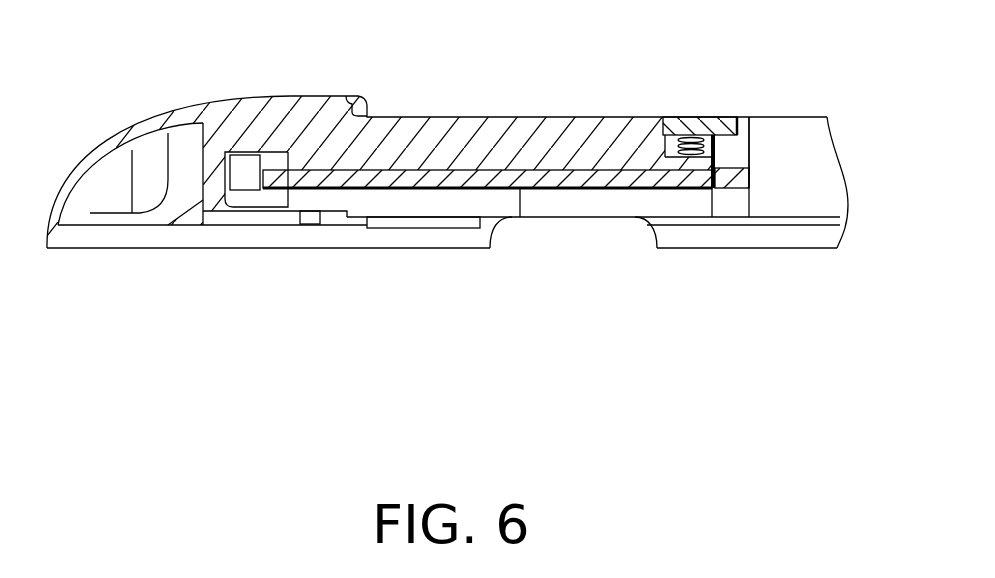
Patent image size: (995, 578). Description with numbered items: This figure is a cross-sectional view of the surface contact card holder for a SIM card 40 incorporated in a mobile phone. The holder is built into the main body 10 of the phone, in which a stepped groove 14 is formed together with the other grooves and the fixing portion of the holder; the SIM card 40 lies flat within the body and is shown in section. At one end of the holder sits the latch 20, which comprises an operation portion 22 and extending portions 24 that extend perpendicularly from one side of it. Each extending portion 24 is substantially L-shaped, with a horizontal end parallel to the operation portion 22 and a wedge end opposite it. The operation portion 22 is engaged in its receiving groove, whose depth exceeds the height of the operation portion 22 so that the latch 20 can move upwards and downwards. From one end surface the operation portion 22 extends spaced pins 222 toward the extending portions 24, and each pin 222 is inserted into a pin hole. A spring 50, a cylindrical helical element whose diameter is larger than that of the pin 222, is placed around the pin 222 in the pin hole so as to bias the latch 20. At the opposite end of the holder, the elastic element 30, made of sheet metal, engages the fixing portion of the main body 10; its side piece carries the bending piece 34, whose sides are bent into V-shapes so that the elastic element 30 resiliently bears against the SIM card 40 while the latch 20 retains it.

The main body 10 is at (136, 115).
The stepped groove 14 is at (740, 157).
The latch 20 is at (742, 114).
The operation portion 22 is at (705, 128).
The extending portion 24 is at (738, 182).
The elastic element 30 is at (260, 222).
The bending piece 34 is at (248, 167).
The SIM card 40 is at (496, 180).
The spring 50 is at (678, 150).
The pin 222 is at (694, 156).